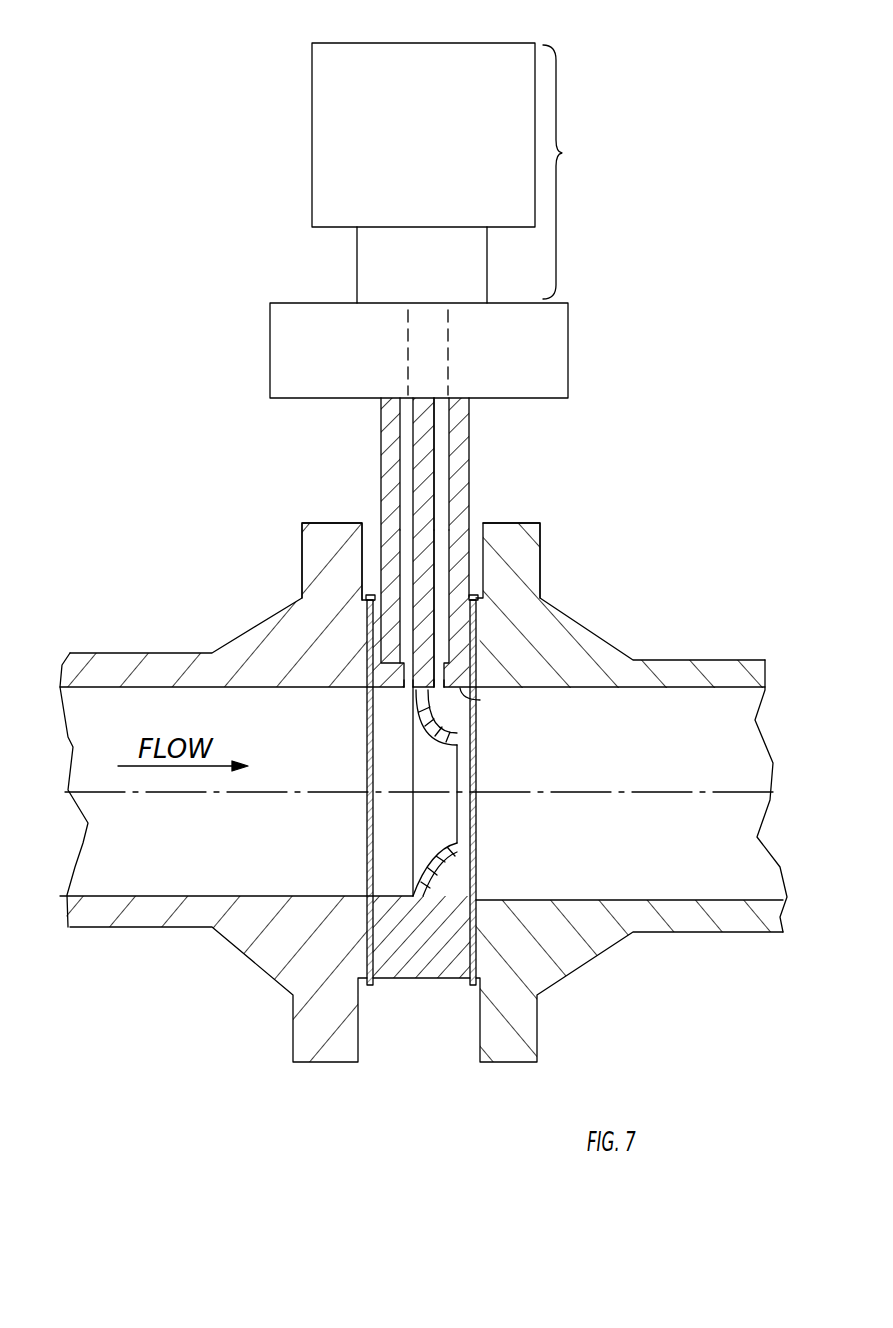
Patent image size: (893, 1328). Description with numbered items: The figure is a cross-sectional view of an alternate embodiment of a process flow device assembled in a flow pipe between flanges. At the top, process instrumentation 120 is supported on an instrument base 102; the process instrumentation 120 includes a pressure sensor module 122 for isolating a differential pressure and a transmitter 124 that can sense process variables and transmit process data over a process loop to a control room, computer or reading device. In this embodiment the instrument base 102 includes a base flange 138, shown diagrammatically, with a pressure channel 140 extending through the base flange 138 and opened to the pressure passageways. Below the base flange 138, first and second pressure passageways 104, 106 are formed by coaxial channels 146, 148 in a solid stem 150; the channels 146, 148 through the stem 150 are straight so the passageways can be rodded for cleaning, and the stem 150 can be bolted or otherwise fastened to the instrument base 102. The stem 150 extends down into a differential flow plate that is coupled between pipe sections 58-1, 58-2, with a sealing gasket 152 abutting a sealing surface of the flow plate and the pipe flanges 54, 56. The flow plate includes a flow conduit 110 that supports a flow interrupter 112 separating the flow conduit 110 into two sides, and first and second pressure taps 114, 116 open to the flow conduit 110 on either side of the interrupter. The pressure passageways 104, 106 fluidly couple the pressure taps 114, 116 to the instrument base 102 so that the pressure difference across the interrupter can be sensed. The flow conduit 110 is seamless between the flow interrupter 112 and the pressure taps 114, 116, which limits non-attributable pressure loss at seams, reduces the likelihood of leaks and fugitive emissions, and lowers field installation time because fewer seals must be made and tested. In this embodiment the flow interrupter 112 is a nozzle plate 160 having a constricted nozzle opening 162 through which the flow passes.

The process instrumentation 120 is at (562, 153).
The transmitter 124 is at (312, 120).
The pressure sensor module 122 is at (357, 268).
The instrument base 102 is at (566, 303).
The base flange 138 is at (568, 327).
The pressure channel 140 is at (412, 347).
The solid stem 150 is at (494, 443).
The coaxial channel 146 is at (397, 437).
The coaxial channel 148 is at (442, 433).
The first pressure passageway 104 is at (405, 531).
The second pressure passageway 106 is at (445, 531).
The pipe section 58-1 is at (236, 780).
The pipe section 58-2 is at (621, 790).
The flange 54 is at (317, 547).
The flange 56 is at (533, 535).
The sealing gasket 152 is at (364, 628).
The first pressure tap 114 is at (412, 690).
The second pressure tap 116 is at (436, 690).
The flow conduit 110 is at (480, 700).
The flow interrupter 112 is at (480, 745).
The constricted nozzle opening 162 is at (445, 810).
The nozzle plate 160 is at (445, 855).